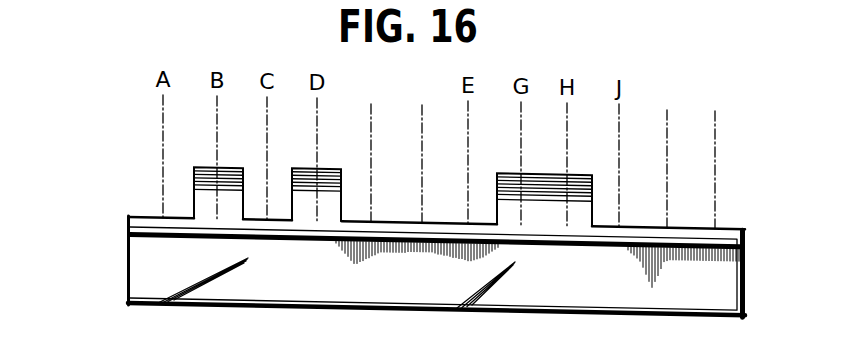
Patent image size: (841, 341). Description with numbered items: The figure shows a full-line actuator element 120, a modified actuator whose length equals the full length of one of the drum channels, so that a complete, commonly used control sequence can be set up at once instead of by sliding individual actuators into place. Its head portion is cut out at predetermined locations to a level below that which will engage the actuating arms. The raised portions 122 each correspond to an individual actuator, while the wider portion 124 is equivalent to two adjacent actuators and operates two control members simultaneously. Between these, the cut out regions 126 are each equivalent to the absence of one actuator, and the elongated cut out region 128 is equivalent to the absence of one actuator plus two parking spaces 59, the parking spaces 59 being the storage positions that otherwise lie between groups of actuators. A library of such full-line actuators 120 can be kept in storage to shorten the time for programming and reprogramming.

The full-line actuator element 120 is at (143, 160).
The portions 122 is at (225, 176).
The portion 124 is at (573, 182).
The cut out regions 126 is at (148, 216).
The elongated cut out region 128 is at (412, 218).
The parking spaces 59 is at (715, 118).